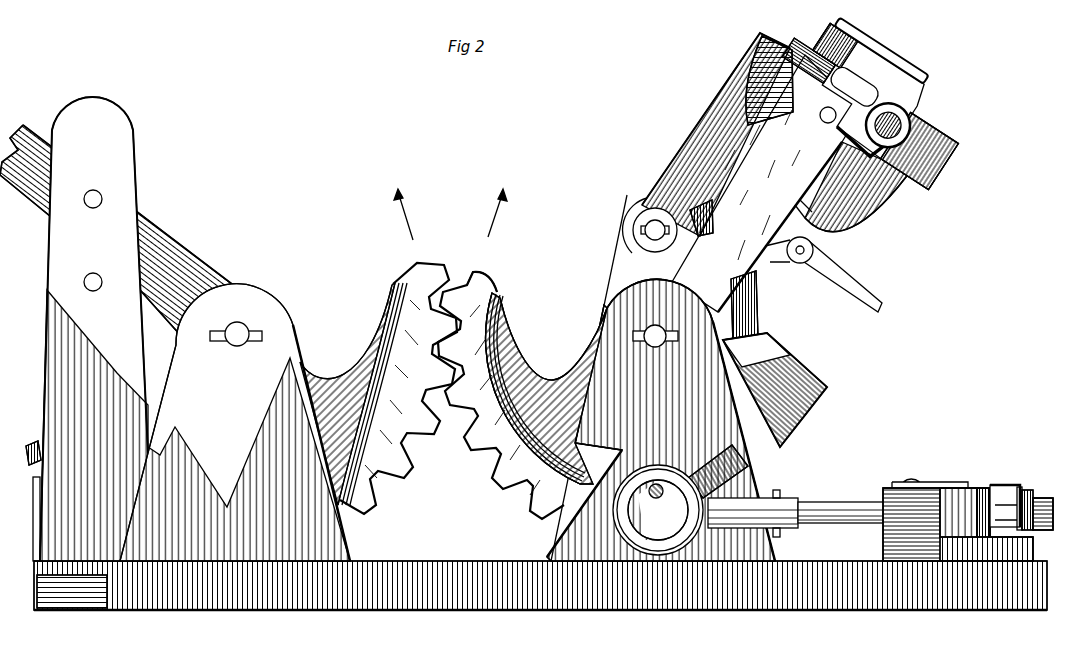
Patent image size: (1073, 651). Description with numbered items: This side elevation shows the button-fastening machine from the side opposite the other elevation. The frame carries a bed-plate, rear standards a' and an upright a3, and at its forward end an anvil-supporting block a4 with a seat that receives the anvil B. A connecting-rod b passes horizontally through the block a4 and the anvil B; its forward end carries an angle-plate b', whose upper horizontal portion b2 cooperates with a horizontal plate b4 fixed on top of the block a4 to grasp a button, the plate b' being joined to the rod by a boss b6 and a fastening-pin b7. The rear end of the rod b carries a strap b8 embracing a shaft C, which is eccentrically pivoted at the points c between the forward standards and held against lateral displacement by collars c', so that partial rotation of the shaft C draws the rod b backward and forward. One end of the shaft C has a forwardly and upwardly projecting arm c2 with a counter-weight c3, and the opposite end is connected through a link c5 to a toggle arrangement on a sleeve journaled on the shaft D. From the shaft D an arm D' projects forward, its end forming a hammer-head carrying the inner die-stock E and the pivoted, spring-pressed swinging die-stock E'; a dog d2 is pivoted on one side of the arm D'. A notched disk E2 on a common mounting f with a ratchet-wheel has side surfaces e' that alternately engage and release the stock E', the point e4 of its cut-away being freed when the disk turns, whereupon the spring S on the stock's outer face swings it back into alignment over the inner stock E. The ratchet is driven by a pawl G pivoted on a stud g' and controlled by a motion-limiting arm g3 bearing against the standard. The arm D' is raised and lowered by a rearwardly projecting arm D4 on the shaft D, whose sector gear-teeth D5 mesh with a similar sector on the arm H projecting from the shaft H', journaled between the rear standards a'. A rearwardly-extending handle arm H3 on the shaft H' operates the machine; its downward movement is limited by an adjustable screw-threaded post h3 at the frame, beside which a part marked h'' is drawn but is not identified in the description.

The rearwardly-extending arm H3 is at (205, 264).
The shaft H' is at (259, 324).
The arm H is at (378, 388).
The upright a3 is at (94, 329).
The rear standards a' is at (195, 422).
The adjustable screw-threaded post h3 is at (35, 442).
The plate h'' is at (23, 519).
The gear-teeth D5 is at (492, 286).
The shaft D is at (620, 328).
The rearwardly-projecting arm D4 is at (540, 383).
The stud g' is at (638, 227).
The motion-limiting arm g3 is at (697, 213).
The pawl G is at (727, 78).
The side surfaces e' is at (769, 75).
The spring S is at (857, 33).
The swinging die-stock E' is at (858, 87).
The inner die-stock E is at (905, 142).
The disk E2 is at (887, 187).
The common mounting f is at (820, 118).
The arm D' is at (766, 183).
The point e4 is at (810, 210).
The dog d2 is at (833, 262).
The link c5 is at (755, 312).
The counter-weight c3 is at (827, 395).
The arm c2 is at (735, 460).
The strap b8 is at (710, 496).
The connecting-rod b is at (841, 502).
The pivot points c is at (664, 495).
The shaft C is at (658, 510).
The collars c' is at (651, 510).
The horizontal plate b4 is at (943, 483).
The anvil B is at (977, 483).
The upper horizontal portion b2 is at (1002, 483).
The angle-plate b' is at (1029, 482).
The fastening-pin b7 is at (1028, 490).
The boss b6 is at (1047, 500).
The anvil-supporting block a4 is at (958, 520).